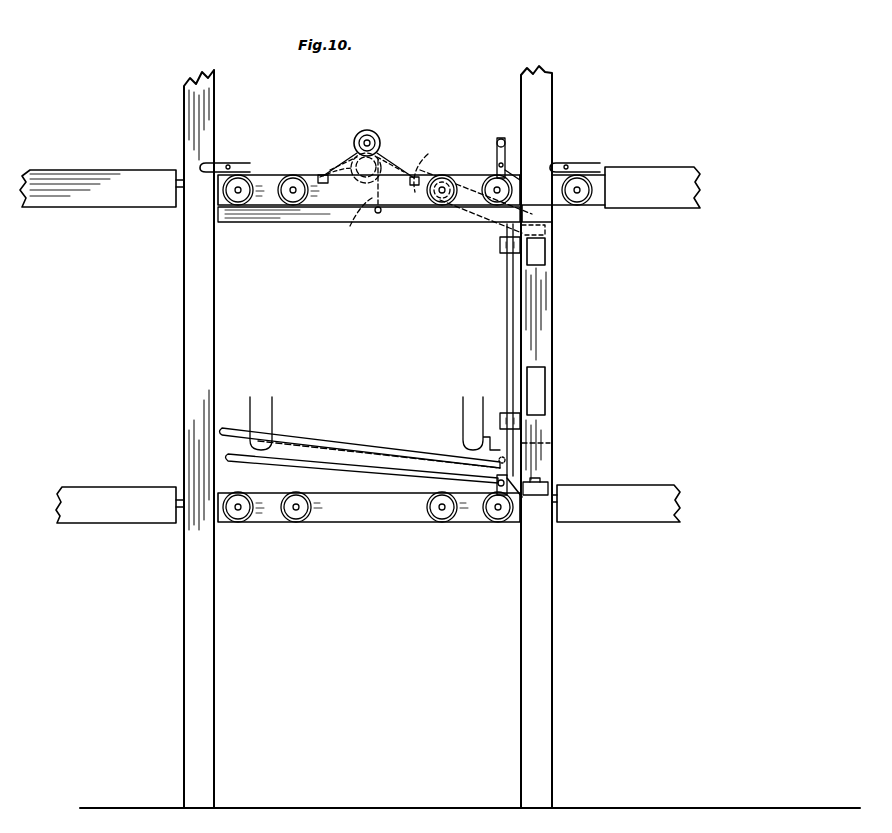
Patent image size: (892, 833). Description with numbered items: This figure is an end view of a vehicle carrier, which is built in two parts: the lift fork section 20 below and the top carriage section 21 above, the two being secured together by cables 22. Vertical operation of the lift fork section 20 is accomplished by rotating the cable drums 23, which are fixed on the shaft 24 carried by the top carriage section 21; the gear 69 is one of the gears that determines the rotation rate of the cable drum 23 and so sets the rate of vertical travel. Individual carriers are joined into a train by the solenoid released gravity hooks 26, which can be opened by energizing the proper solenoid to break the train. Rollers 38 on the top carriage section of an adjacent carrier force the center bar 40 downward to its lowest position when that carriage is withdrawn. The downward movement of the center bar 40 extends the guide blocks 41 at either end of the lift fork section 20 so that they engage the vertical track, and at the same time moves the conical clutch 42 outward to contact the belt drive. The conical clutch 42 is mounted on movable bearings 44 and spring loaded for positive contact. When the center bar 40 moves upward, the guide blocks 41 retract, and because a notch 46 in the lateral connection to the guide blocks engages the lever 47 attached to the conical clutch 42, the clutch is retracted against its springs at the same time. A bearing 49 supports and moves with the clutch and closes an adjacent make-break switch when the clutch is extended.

The lift fork section 20 is at (553, 330).
The top carriage section 21 is at (262, 176).
The cables 22 is at (354, 229).
The cable drums 23 is at (390, 170).
The shaft 24 is at (381, 186).
The solenoid released gravity hooks 26 is at (230, 163).
The rollers 38 is at (497, 143).
The center bar 40 is at (506, 330).
The guide blocks 41 is at (546, 258).
The conical clutch 42 is at (370, 140).
The movable bearings 44 is at (420, 157).
The notch 46 is at (545, 232).
The lever 47 is at (472, 218).
The bearing 49 is at (356, 150).
The gear 69 is at (334, 162).